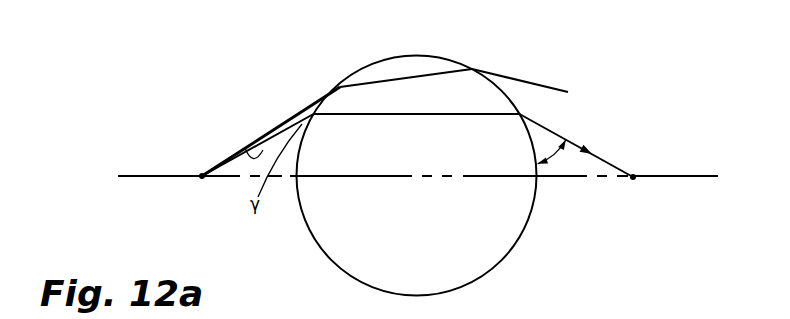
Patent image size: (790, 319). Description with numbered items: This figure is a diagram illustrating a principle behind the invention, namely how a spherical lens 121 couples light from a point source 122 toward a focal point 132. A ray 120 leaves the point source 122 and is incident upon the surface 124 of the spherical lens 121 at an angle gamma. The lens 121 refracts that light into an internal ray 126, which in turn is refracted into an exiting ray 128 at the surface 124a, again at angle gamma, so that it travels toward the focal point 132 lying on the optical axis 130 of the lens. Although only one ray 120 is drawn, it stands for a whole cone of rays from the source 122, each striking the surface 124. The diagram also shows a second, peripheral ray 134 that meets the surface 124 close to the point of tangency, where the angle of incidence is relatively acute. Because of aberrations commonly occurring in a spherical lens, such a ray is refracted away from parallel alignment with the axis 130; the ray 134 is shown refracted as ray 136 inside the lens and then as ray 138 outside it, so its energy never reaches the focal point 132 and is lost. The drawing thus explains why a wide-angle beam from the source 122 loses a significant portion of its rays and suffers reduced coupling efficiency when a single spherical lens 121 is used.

The ray 120 is at (279, 124).
The spherical lens 121 is at (296, 250).
The point source 122 is at (202, 179).
The surface 124 is at (315, 118).
The surface 124a is at (525, 123).
The ray 126 is at (431, 112).
The ray 128 is at (572, 140).
The optical axis 130 is at (375, 175).
The focal point 132 is at (632, 182).
The ray 134 is at (275, 125).
The ray 136 is at (385, 80).
The ray 138 is at (503, 74).